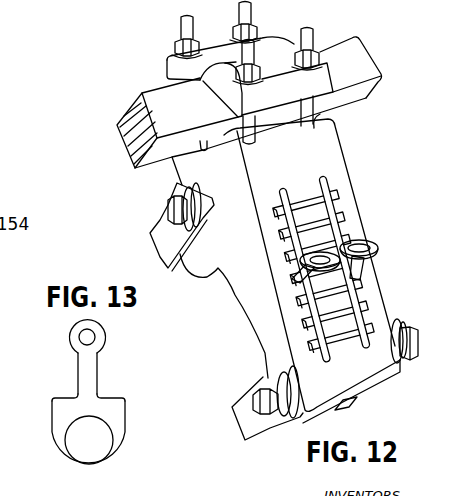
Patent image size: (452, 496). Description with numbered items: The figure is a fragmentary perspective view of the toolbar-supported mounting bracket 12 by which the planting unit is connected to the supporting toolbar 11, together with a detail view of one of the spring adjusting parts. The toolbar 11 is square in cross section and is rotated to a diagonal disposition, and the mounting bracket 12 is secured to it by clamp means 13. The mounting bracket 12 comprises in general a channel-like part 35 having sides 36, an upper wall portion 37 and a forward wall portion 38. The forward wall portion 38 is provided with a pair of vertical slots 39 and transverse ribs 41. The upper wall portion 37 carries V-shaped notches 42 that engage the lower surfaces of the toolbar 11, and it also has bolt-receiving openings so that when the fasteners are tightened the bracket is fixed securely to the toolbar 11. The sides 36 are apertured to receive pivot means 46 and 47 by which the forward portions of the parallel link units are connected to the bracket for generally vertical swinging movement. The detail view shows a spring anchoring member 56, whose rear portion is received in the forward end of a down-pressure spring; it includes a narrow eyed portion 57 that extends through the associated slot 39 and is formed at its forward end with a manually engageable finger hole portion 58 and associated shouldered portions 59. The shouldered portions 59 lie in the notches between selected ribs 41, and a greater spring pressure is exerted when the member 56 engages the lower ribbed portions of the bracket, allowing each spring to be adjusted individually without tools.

In FIG. 12, the toolbar 11 is at (364, 61).
In FIG. 12, the mounting bracket 12 is at (333, 264).
In FIG. 12, the clamp means 13 is at (272, 44).
In FIG. 12, the channel-like part 35 is at (295, 267).
In FIG. 12, the sides 36 is at (216, 268).
In FIG. 12, the upper wall portion 37 is at (328, 121).
In FIG. 12, the forward wall portion 38 is at (329, 163).
In FIG. 12, the vertical slots 39 is at (335, 268).
In FIG. 12, the transverse ribs 41 is at (343, 199).
In FIG. 12, the V-shaped notches 42 is at (202, 151).
In FIG. 12, the pivot means 46 is at (168, 212).
In FIG. 12, the pivot means 47 is at (254, 397).
In FIG. 12, the spring anchoring member 56 is at (369, 239).
In FIG. 13, the spring anchoring member 56 is at (84, 399).
In FIG. 13, the narrow eyed portion 57 is at (91, 365).
In FIG. 12, the finger hole portion 58 is at (372, 255).
In FIG. 13, the finger hole portion 58 is at (118, 462).
In FIG. 13, the shouldered portions 59 is at (110, 397).